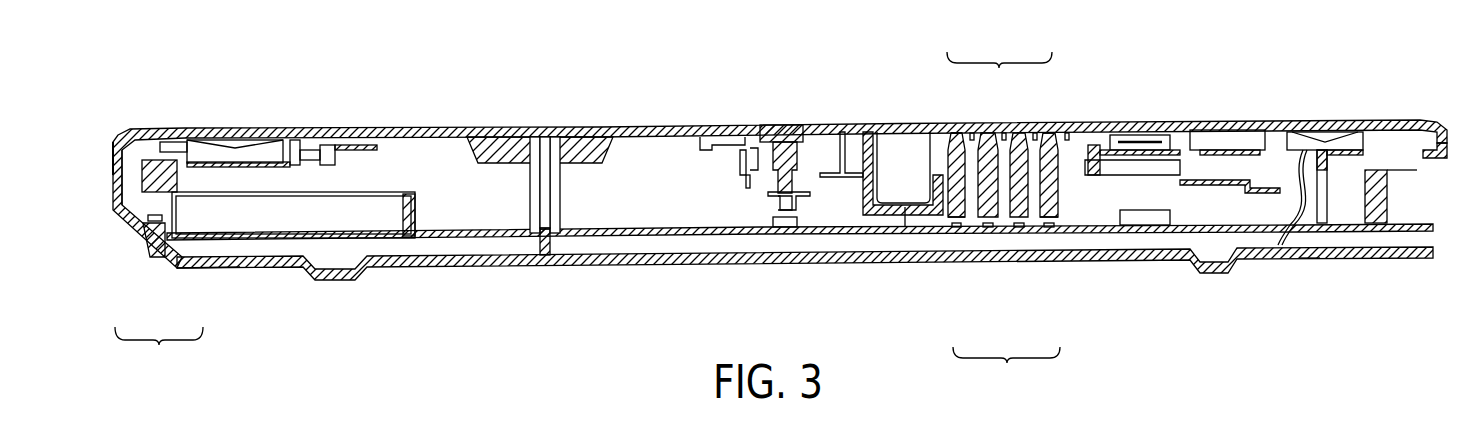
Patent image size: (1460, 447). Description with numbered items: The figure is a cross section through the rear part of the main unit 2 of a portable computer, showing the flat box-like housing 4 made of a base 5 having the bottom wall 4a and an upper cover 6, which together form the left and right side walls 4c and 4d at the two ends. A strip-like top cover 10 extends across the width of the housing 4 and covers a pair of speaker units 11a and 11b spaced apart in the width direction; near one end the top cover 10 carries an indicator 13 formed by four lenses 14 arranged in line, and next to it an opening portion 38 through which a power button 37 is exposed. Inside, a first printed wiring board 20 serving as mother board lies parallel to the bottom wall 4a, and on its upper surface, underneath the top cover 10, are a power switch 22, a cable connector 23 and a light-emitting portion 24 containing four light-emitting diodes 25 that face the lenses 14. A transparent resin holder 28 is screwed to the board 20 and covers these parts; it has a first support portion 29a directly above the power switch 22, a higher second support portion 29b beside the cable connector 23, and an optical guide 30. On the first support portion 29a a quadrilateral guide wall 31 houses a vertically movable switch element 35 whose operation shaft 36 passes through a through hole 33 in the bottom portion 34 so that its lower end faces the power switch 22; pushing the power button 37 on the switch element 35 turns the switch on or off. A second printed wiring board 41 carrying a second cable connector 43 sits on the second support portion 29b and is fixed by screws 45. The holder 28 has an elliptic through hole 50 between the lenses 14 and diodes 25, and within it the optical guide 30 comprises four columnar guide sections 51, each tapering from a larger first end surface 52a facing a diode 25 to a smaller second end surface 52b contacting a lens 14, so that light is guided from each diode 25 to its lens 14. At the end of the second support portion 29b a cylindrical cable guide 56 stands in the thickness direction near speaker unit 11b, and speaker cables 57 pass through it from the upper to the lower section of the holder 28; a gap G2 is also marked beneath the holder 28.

The main unit 2 is at (1307, 264).
The housing 4 is at (159, 352).
The bottom wall 4a is at (447, 260).
The left side wall 4c is at (106, 153).
The right side wall 4d is at (1445, 137).
The base 5 is at (180, 267).
The upper cover 6 is at (105, 190).
The top cover 10 is at (607, 127).
The speaker unit 11a is at (220, 138).
The speaker unit 11b is at (1300, 140).
The indicator 13 is at (999, 41).
The lenses 14 is at (988, 133).
The first printed wiring board 20 is at (617, 237).
The power switch 22 is at (790, 227).
The cable connector 23 is at (1152, 225).
The light-emitting portion 24 is at (1006, 369).
The light-emitting diodes 25 is at (990, 233).
The holder 28 is at (1208, 183).
The first support portion 29a is at (833, 170).
The second support portion 29b is at (1143, 163).
The optical guide 30 is at (943, 157).
The guide wall 31 is at (750, 155).
The through hole 33 is at (787, 217).
The bottom portion 34 is at (800, 196).
The switch element 35 is at (747, 178).
The operation shaft 36 is at (773, 182).
The power button 37 is at (780, 125).
The opening portion 38 is at (760, 128).
The second printed wiring board 41 is at (1176, 128).
The second cable connector 43 is at (1145, 135).
The screws 45 is at (1108, 150).
The through hole 50 is at (1096, 145).
The guide sections 51 is at (947, 183).
The first end surface 52a is at (947, 217).
The second end surface 52b is at (950, 133).
The cable guide 56 is at (1328, 205).
The speaker cables 57 is at (1288, 245).
The gap G2 is at (910, 205).